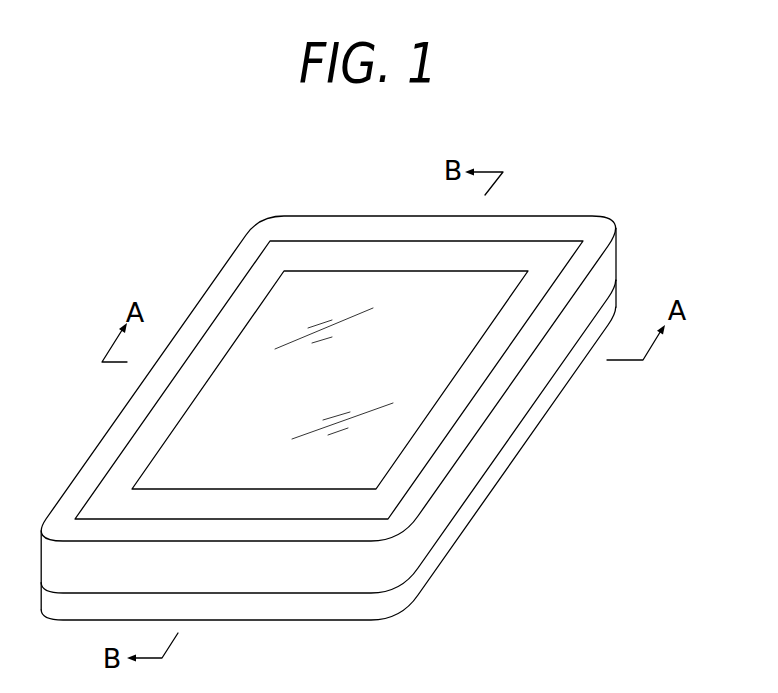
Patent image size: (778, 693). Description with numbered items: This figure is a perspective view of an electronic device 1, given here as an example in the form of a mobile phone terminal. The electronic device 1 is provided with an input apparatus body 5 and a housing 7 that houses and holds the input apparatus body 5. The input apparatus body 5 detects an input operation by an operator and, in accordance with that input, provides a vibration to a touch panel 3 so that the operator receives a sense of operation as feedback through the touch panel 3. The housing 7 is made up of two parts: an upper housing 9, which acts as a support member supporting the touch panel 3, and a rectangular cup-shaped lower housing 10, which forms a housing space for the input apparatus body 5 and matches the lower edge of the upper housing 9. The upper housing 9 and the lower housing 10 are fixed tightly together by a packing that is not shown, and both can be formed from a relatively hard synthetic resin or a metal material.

The electronic device 1 is at (384, 396).
The touch panel 3 is at (383, 290).
The input apparatus body 5 is at (329, 297).
The housing 7 is at (384, 396).
The upper housing 9 is at (612, 253).
The lower housing 10 is at (612, 307).